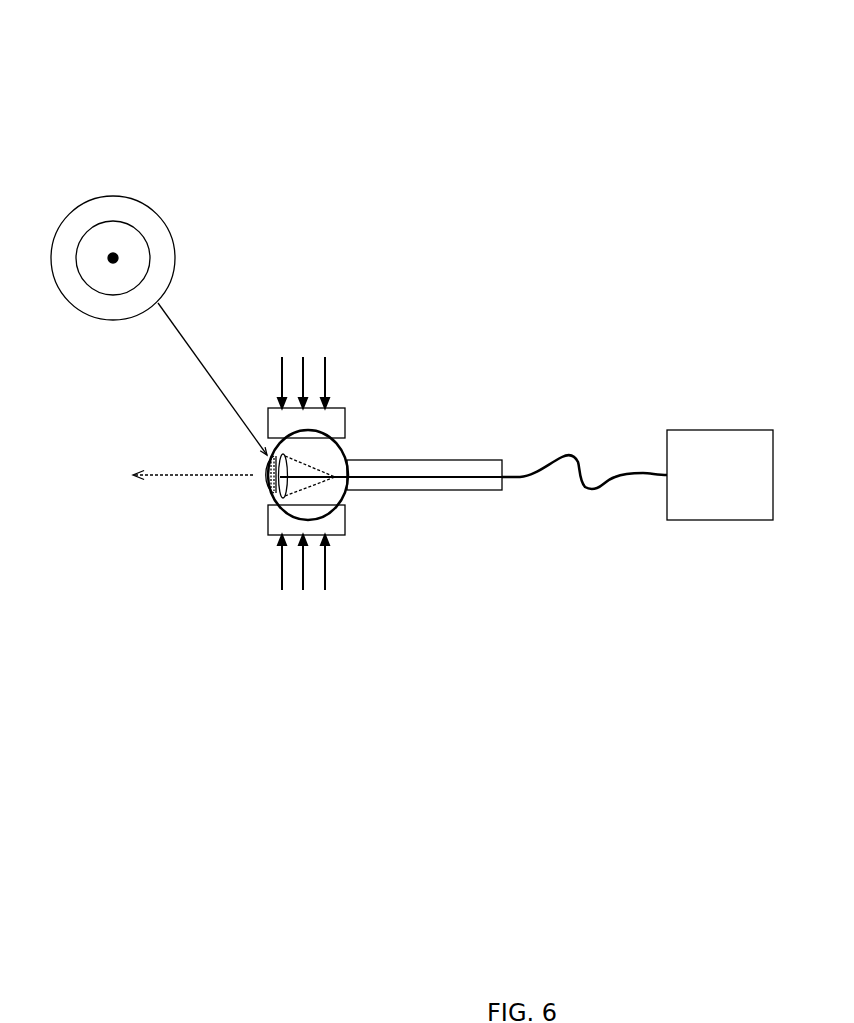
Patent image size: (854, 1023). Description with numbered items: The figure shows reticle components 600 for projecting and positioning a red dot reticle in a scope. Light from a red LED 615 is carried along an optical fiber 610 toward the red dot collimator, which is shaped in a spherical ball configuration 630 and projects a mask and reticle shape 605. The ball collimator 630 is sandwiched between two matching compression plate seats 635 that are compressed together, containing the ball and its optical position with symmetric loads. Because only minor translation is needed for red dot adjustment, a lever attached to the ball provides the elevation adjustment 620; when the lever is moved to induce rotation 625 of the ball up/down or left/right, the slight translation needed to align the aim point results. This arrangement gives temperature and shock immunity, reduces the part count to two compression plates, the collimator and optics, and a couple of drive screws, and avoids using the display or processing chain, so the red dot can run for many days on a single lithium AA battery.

The reticle components 600 is at (78, 48).
The mask and reticle shape 605 is at (178, 258).
The optical fiber 610 is at (577, 458).
The red LED 615 is at (720, 458).
The elevation adjustment 620 is at (482, 493).
The rotation induced by lever movement 625 is at (377, 500).
The spherical ball collimator 630 is at (345, 453).
The compression plate seats 635 is at (265, 427).